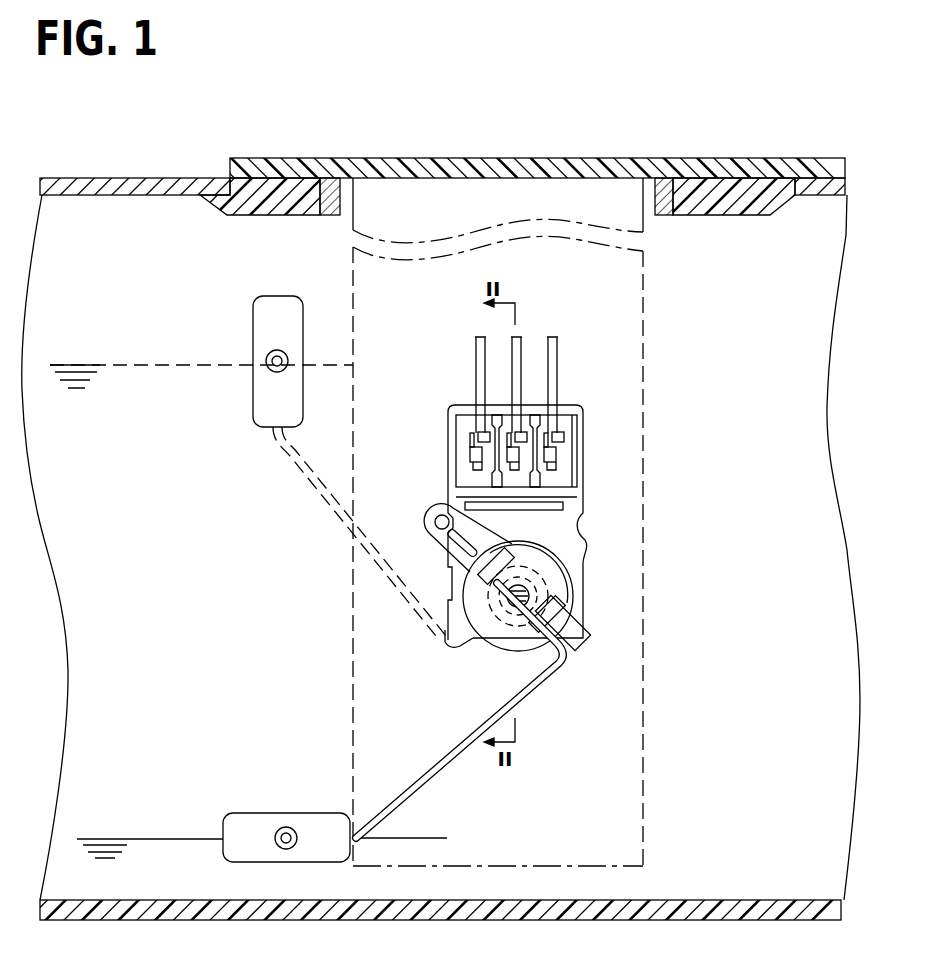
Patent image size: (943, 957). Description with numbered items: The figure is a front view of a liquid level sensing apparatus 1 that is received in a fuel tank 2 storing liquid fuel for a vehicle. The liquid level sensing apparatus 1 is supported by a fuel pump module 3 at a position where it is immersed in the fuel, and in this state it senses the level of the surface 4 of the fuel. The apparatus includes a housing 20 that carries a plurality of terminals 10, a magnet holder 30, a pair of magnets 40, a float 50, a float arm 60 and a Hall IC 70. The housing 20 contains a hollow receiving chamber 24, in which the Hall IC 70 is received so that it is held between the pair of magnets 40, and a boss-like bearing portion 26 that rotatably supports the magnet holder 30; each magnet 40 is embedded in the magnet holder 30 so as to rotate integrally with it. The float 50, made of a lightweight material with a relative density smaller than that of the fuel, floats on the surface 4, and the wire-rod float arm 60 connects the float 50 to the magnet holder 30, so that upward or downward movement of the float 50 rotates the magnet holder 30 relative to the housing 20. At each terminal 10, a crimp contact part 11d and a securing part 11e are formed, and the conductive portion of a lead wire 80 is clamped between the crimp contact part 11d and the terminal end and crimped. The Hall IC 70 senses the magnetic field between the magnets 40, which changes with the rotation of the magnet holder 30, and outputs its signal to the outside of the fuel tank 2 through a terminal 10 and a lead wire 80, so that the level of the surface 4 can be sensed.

The liquid level sensing apparatus 1 is at (584, 401).
The fuel tank 2 is at (92, 185).
The fuel pump module 3 is at (643, 291).
The surface 4 is at (85, 365).
The terminal 10 is at (562, 474).
The crimp contact part 11d is at (474, 453).
The securing part 11e is at (562, 438).
The housing 20 is at (584, 433).
The receiving chamber 24 is at (467, 590).
The bearing portion 26 is at (450, 622).
The magnet holder 30 is at (565, 598).
The magnet 40 is at (545, 580).
The float 50 is at (288, 826).
The float arm 60 is at (543, 688).
The Hall IC 70 is at (447, 632).
The lead wire 80 is at (558, 353).